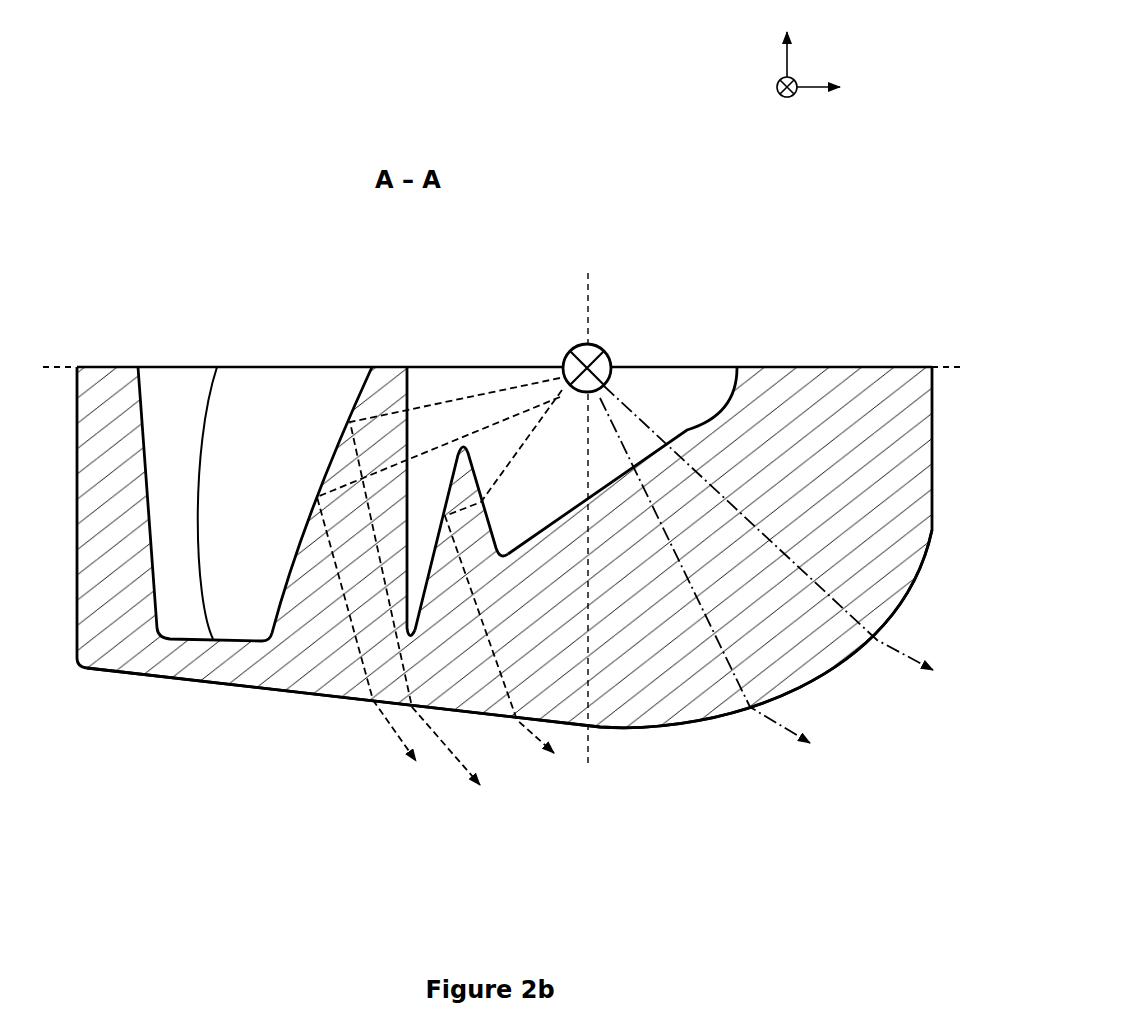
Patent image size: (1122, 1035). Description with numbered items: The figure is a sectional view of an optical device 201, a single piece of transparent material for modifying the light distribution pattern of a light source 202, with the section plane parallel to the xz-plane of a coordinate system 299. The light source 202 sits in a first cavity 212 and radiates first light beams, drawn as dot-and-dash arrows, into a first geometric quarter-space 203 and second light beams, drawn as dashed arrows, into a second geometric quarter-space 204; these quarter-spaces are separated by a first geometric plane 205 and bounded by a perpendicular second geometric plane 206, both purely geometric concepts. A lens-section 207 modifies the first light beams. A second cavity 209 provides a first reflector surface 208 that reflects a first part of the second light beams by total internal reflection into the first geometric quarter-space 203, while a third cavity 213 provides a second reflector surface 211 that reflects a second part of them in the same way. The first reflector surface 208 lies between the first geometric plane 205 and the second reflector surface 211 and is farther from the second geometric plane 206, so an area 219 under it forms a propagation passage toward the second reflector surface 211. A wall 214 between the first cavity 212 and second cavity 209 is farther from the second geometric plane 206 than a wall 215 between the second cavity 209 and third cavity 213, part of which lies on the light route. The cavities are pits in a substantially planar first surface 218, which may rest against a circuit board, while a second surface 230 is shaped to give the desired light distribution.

The optical device 201 is at (187, 256).
The light source 202 is at (612, 361).
The first geometric quarter-space 203 is at (863, 704).
The second geometric quarter-space 204 is at (150, 744).
The first geometric plane 205 is at (590, 317).
The second geometric plane 206 is at (57, 367).
The lens-section 207 is at (820, 551).
The first reflector surface 208 is at (443, 489).
The second cavity 209 is at (420, 547).
The second reflector surface 211 is at (326, 453).
The first cavity 212 is at (533, 479).
The third cavity 213 is at (237, 503).
The wall 214 is at (462, 480).
The wall 215 is at (378, 445).
The first surface 218 is at (773, 356).
The area 219 is at (466, 415).
The second surface 230 is at (652, 739).
The coordinate system 299 is at (803, 64).